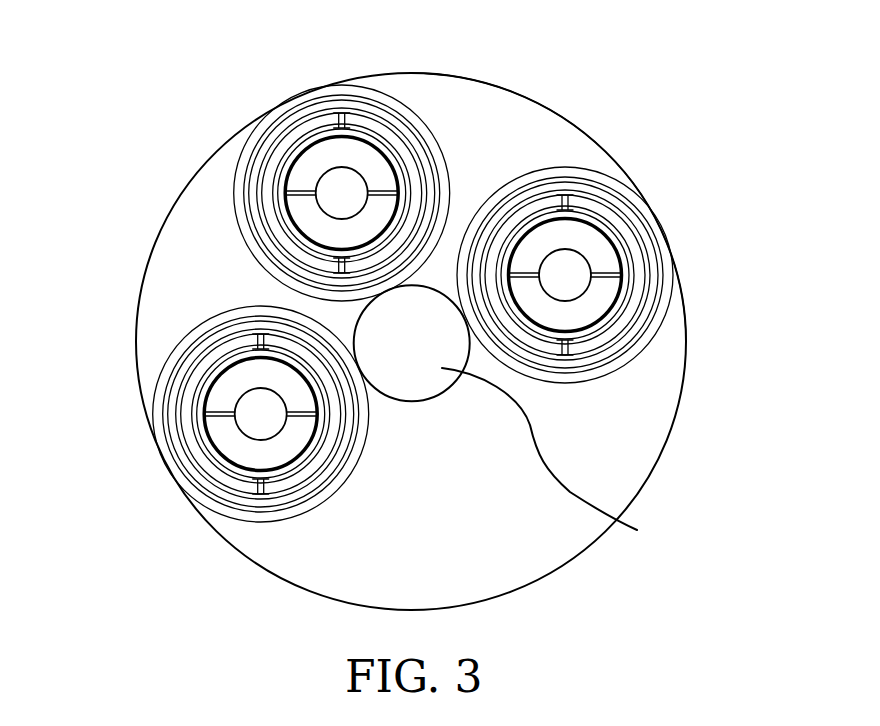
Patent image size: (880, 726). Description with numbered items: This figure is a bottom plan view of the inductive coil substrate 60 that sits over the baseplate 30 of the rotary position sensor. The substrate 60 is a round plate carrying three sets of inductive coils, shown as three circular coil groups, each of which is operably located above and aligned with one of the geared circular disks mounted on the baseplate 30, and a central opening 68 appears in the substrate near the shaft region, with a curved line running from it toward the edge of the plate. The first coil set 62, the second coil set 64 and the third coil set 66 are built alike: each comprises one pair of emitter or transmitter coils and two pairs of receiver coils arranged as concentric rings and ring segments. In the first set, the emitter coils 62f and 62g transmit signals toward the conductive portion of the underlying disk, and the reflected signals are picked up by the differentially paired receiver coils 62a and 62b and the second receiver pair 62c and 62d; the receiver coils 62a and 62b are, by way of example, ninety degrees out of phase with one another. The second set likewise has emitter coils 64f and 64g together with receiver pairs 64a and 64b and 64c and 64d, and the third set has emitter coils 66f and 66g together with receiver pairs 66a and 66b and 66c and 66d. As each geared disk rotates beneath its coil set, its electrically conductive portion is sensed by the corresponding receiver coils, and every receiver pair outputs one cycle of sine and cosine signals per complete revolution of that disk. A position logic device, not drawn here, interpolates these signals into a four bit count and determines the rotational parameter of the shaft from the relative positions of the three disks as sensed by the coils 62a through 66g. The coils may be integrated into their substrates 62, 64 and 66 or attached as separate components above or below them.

The baseplate 30 is at (660, 437).
The substrate 60 is at (683, 372).
The fluid passage 68 is at (513, 415).
The inductive coil 62 is at (165, 463).
The receiver coil 62a is at (226, 387).
The receiver coil 62b is at (287, 443).
The receiver coil 62c is at (185, 395).
The receiver coil 62d is at (343, 415).
The emitter coil 62f is at (270, 353).
The emitter coil 62g is at (345, 453).
The inductive coil 64 is at (300, 96).
The receiver coil 64a is at (365, 160).
The receiver coil 64b is at (392, 207).
The receiver coil 64c is at (280, 150).
The receiver coil 64d is at (395, 135).
The emitter coil 64f is at (336, 130).
The emitter coil 64g is at (432, 210).
The inductive coil 66 is at (592, 178).
The receiver coil 66a is at (637, 250).
The receiver coil 66b is at (603, 288).
The receiver coil 66c is at (553, 203).
The receiver coil 66d is at (653, 243).
The emitter coil 66f is at (601, 255).
The emitter coil 66g is at (647, 318).